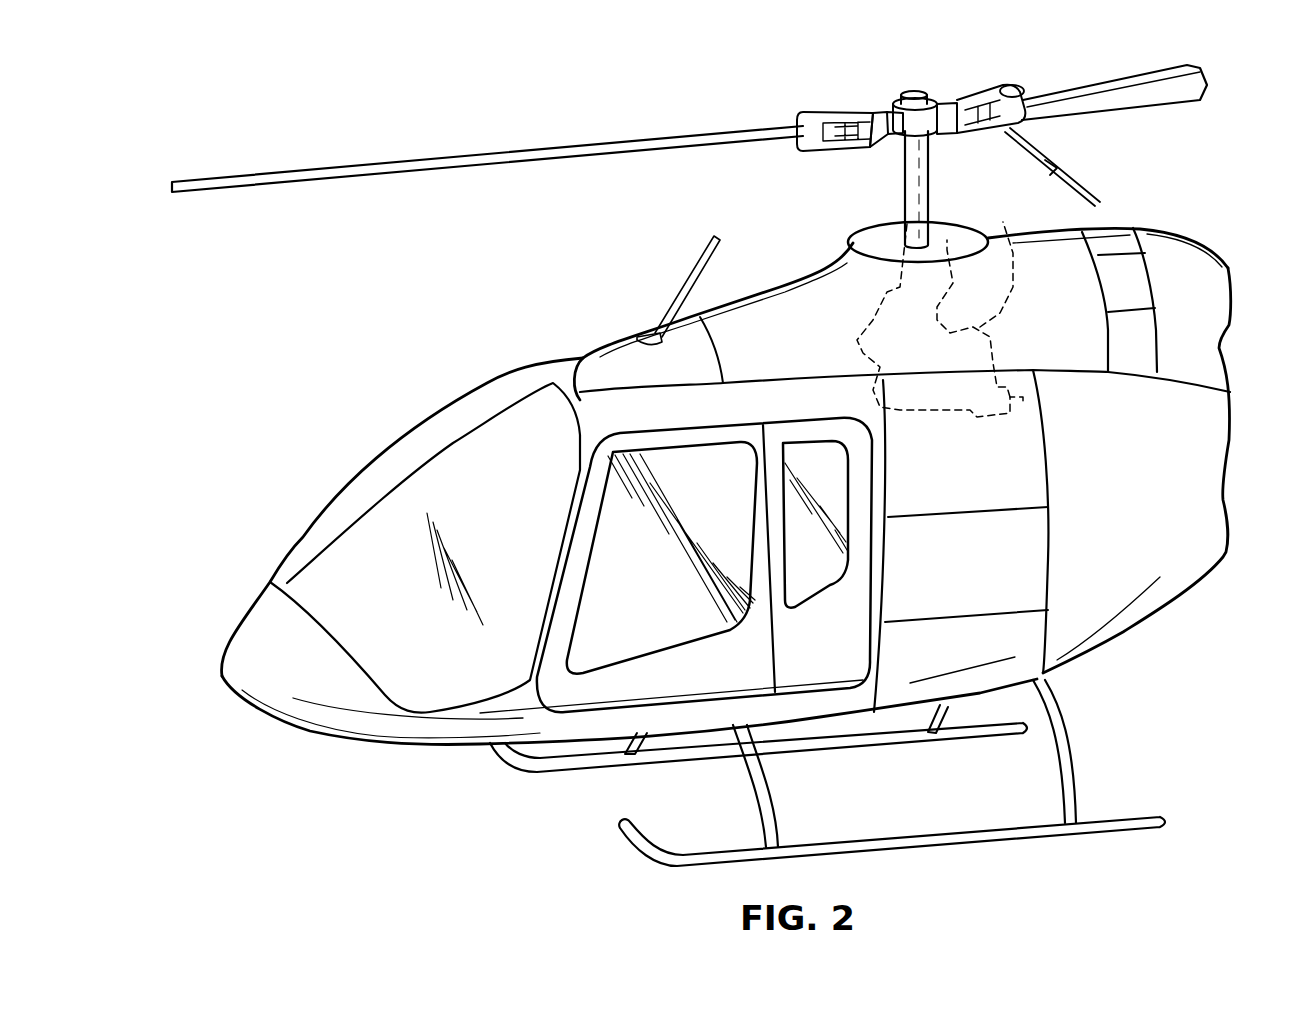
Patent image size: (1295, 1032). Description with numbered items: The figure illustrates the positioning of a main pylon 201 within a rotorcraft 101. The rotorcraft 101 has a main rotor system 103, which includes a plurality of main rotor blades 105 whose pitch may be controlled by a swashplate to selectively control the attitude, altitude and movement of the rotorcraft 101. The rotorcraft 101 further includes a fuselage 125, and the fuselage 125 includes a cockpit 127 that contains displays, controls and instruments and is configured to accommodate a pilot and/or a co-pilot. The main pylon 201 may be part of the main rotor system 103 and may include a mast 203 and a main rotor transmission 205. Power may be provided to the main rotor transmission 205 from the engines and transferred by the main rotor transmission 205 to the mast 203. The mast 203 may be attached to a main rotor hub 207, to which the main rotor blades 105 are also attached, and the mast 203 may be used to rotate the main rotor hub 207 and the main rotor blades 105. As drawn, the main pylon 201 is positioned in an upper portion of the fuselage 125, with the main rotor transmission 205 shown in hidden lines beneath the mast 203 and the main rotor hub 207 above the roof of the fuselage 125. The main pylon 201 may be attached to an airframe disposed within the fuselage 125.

The rotorcraft 101 is at (242, 93).
The main rotor system 103 is at (901, 76).
The main rotor blades 105 is at (440, 157).
The fuselage 125 is at (460, 748).
The cockpit 127 is at (380, 457).
The main pylon 201 is at (1053, 165).
The mast 203 is at (930, 178).
The main rotor transmission 205 is at (1007, 240).
The main rotor hub 207 is at (953, 72).